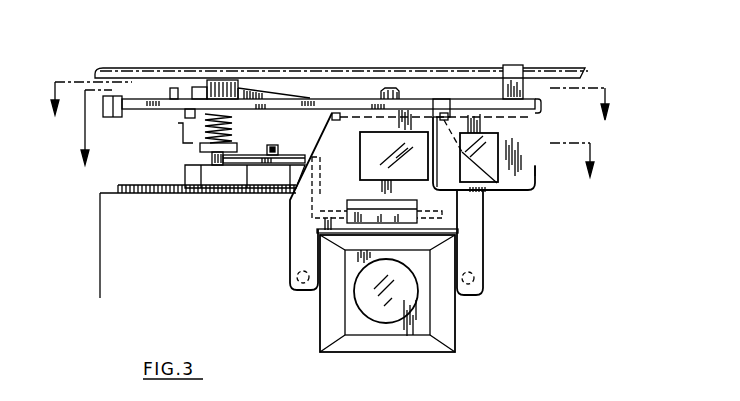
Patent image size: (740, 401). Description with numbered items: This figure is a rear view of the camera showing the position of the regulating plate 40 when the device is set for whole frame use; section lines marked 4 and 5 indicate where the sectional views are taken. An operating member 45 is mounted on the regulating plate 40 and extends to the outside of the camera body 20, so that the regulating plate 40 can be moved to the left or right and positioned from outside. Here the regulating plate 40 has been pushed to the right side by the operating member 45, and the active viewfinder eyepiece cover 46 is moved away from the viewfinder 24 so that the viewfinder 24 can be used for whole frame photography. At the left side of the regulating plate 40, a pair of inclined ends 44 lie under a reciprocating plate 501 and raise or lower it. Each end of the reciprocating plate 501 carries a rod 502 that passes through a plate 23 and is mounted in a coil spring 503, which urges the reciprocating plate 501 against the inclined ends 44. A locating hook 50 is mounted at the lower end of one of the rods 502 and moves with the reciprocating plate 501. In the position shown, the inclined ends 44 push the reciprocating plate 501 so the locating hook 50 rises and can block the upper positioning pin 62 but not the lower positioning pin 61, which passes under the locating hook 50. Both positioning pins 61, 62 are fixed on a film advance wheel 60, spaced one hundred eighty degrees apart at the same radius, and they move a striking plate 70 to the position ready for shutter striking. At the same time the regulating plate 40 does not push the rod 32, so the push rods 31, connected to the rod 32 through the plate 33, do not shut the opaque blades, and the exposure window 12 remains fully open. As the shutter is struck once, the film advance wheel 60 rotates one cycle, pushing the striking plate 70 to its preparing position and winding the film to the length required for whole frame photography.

The section line 4- 4 is at (329, 112).
The section line 5- 5 is at (337, 145).
The exposure window 12 is at (383, 313).
The camera body 20 is at (410, 76).
The plate 23 is at (338, 121).
The viewfinder 24 is at (417, 170).
The push rods 31 is at (303, 284).
The rod 32 is at (384, 89).
The plate 33 is at (297, 250).
The regulating plate 40 is at (313, 99).
The inclined ends 44 is at (258, 91).
The operating member 45 is at (514, 82).
The viewfinder eyepiece cover 46 is at (488, 172).
The locating hook 50 is at (234, 146).
The film advance wheel 60 is at (207, 175).
The lower positioning pin 61 is at (212, 158).
The upper positioning pin 62 is at (280, 150).
The striking plate 70 is at (313, 200).
The reciprocating plate 501 is at (227, 80).
The rod 502 is at (213, 98).
The coil spring 503 is at (207, 119).